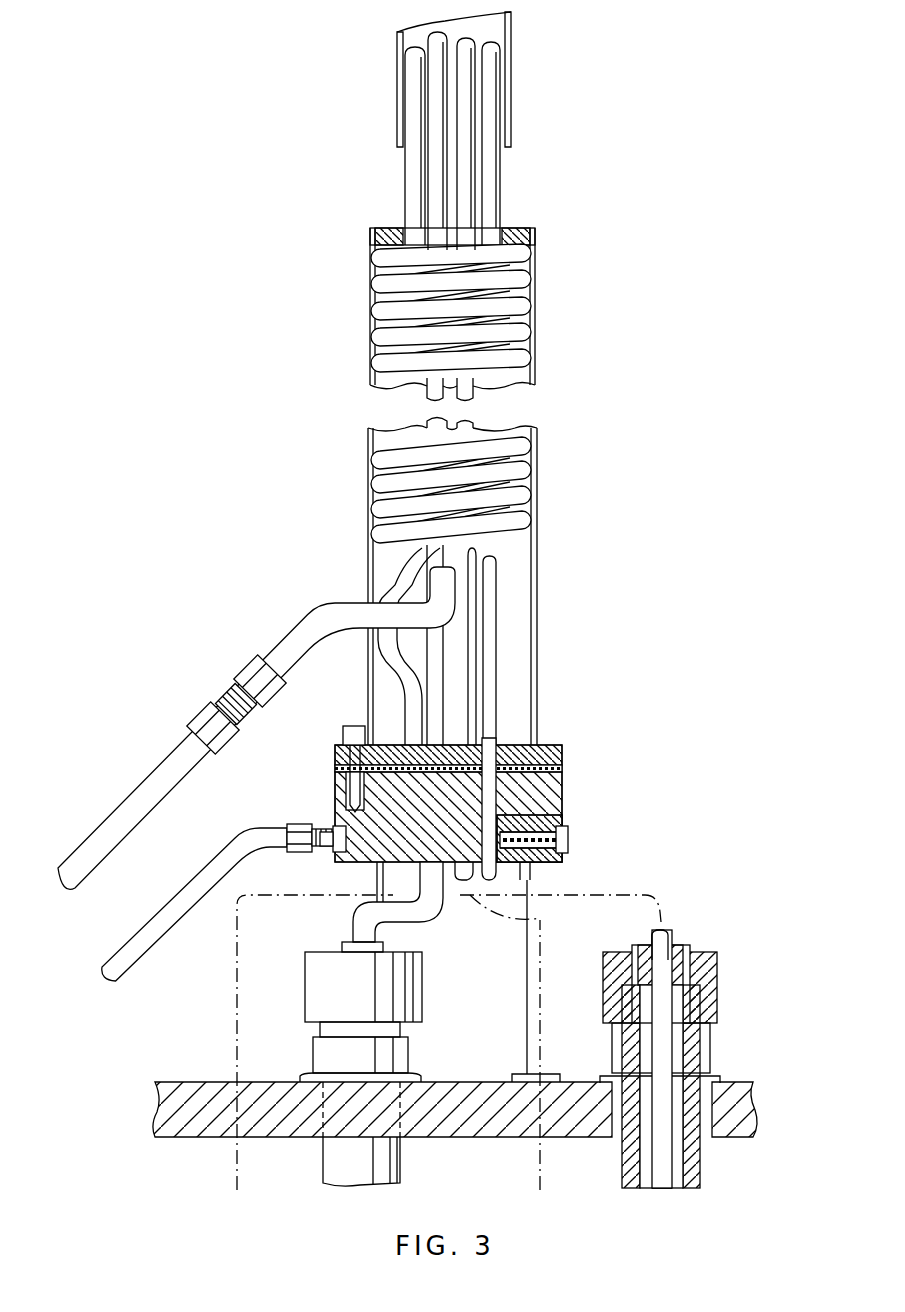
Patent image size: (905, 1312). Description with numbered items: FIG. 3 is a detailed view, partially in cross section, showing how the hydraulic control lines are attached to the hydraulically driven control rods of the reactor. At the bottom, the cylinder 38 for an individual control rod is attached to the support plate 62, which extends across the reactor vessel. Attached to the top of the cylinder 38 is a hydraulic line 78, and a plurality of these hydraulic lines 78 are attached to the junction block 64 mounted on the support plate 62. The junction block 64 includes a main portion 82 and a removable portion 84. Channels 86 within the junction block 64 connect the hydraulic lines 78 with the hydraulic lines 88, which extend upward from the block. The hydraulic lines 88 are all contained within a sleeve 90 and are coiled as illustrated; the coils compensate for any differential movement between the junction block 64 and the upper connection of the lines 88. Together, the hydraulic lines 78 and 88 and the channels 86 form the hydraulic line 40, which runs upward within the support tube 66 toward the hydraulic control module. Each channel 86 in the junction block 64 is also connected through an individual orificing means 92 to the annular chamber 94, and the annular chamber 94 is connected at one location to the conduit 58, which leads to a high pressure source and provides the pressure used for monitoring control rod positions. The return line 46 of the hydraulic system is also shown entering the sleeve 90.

The cylinder 38 is at (400, 1160).
The hydraulic line 40 is at (485, 128).
The return line 46 is at (303, 630).
The conduit 58 is at (262, 836).
The support plate 62 is at (207, 1127).
The junction block 64 is at (468, 797).
The support tube 66 is at (511, 62).
The hydraulic line 78 is at (237, 993).
The main portion 82 is at (550, 800).
The removable portion 84 is at (558, 745).
The channel 86 is at (500, 816).
The hydraulic line 88 is at (463, 98).
The sleeve 90 is at (535, 613).
The orificing means 92 is at (570, 843).
The annular chamber 94 is at (543, 873).